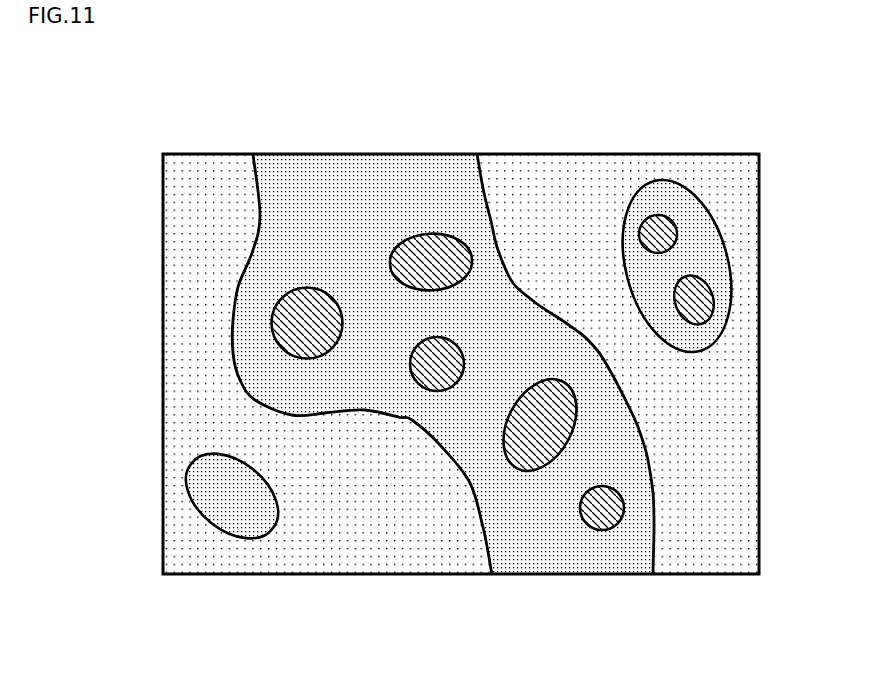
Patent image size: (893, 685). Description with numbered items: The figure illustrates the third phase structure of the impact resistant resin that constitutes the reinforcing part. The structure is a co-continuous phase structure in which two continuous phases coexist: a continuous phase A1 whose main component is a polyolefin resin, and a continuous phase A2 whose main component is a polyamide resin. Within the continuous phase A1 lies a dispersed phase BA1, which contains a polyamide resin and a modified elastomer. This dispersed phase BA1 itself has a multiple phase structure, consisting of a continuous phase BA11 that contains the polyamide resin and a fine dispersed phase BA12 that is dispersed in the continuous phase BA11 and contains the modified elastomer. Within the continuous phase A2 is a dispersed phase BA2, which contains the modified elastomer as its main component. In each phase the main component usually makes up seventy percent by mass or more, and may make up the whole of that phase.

The continuous phase A1 is at (210, 163).
The continuous phase A2 is at (313, 162).
The dispersed phase BA1 is at (800, 111).
The continuous phase BA11 is at (667, 195).
The fine dispersed phase BA12 is at (692, 288).
The dispersed phase BA2 is at (613, 585).